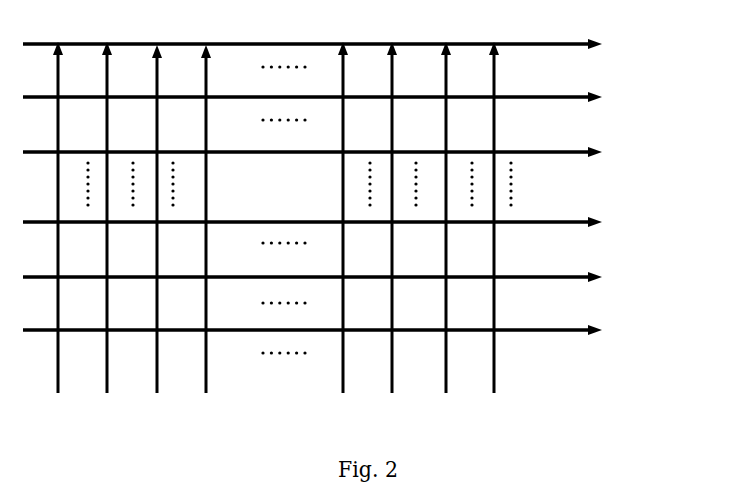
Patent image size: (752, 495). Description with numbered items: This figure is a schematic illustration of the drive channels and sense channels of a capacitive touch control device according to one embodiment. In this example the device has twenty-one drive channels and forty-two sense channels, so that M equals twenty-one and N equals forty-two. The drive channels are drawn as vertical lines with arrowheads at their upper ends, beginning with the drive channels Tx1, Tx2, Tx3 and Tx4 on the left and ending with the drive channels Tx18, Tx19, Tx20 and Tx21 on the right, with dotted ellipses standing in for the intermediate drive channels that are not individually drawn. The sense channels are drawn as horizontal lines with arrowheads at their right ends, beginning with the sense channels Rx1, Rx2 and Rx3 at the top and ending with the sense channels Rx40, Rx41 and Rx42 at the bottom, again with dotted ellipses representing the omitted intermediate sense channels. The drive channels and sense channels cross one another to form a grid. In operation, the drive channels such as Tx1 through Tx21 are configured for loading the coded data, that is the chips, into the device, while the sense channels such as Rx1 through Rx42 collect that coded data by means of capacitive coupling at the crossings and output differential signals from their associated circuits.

The sense channel Rx1 is at (338, 44).
The sense channel Rx2 is at (338, 97).
The sense channel Rx3 is at (338, 152).
The sense channel Rx40 is at (342, 222).
The sense channel Rx41 is at (342, 277).
The sense channel Rx42 is at (342, 330).
The drive channel Tx1 is at (57, 233).
The drive channel Tx2 is at (109, 233).
The drive channel Tx3 is at (160, 233).
The drive channel Tx4 is at (212, 234).
The drive channel Tx18 is at (343, 231).
The drive channel Tx19 is at (395, 229).
The drive channel Tx20 is at (452, 229).
The drive channel Tx21 is at (506, 229).